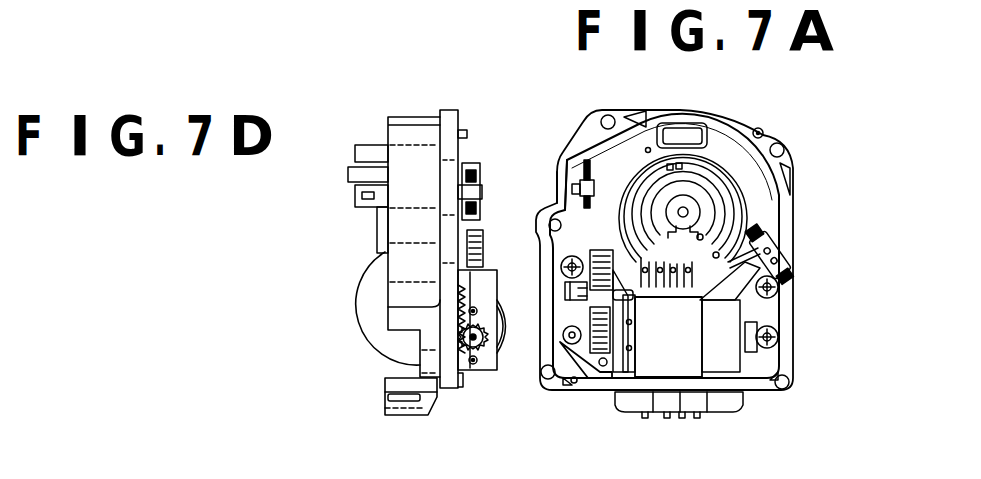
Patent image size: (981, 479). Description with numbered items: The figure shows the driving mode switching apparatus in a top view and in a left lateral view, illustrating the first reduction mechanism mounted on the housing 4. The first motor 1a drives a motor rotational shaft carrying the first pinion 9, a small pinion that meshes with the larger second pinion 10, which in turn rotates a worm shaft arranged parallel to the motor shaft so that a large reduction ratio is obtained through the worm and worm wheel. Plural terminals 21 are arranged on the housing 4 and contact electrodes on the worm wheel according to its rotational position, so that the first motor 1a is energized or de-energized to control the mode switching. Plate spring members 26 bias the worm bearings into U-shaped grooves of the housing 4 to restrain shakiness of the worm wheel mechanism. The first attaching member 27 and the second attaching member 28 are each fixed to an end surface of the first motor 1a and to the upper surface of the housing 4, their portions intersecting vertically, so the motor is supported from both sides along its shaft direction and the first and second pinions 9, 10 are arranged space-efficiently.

In FIG. 7A, the first motor 1a is at (713, 377).
In FIG. 7D, the first motor 1a is at (510, 363).
In FIG. 7A, the housing 4 is at (753, 145).
In FIG. 7D, the housing 4 is at (458, 123).
In FIG. 7A, the first pinion 9 is at (601, 378).
In FIG. 7D, the first pinion 9 is at (460, 383).
In FIG. 7A, the second pinion 10 is at (550, 228).
In FIG. 7D, the second pinion 10 is at (475, 277).
In FIG. 7A, the terminals 21 is at (700, 275).
In FIG. 7A, the plate spring members 26 is at (768, 303).
In FIG. 7D, the plate spring members 26 is at (470, 215).
In FIG. 7A, the first attaching member 27 is at (568, 370).
In FIG. 7A, the second attaching member 28 is at (783, 348).